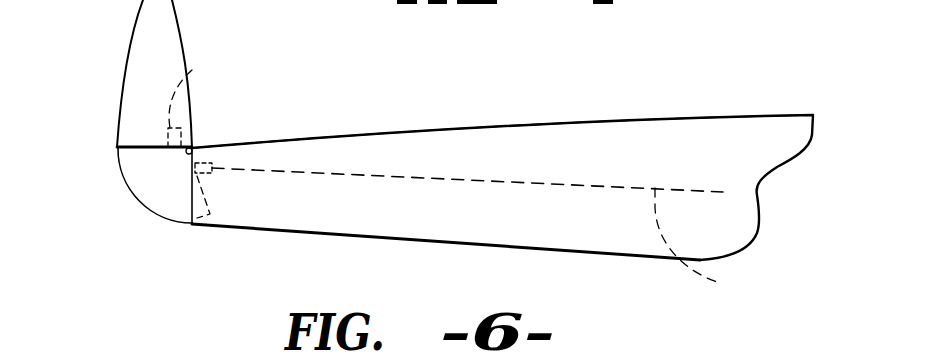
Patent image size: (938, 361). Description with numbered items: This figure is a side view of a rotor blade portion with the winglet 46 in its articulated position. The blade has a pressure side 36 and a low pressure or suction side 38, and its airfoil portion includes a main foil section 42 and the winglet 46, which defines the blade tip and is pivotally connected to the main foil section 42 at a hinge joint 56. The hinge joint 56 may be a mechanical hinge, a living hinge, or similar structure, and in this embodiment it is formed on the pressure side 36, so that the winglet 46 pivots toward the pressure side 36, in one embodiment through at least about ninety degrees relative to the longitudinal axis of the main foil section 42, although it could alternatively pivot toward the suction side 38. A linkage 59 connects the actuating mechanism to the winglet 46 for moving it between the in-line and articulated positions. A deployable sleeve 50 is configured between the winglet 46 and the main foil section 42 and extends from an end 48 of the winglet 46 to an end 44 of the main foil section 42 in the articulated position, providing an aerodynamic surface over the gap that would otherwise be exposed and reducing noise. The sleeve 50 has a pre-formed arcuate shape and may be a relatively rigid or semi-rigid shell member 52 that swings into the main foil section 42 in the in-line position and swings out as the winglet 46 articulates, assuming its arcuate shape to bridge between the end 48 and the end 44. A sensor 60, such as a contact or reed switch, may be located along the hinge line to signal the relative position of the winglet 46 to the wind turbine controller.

The pressure side 36 is at (640, 117).
The suction side 38 is at (578, 257).
The main foil section 42 is at (527, 135).
The end of the main foil section 44 is at (193, 201).
The winglet 46 is at (145, 65).
The end of the winglet 48 is at (135, 148).
The deployable sleeve 50 is at (158, 178).
The shell member 52 is at (163, 218).
The hinge joint 56 is at (192, 125).
The linkage 59 is at (712, 248).
The sensor 60 is at (192, 70).